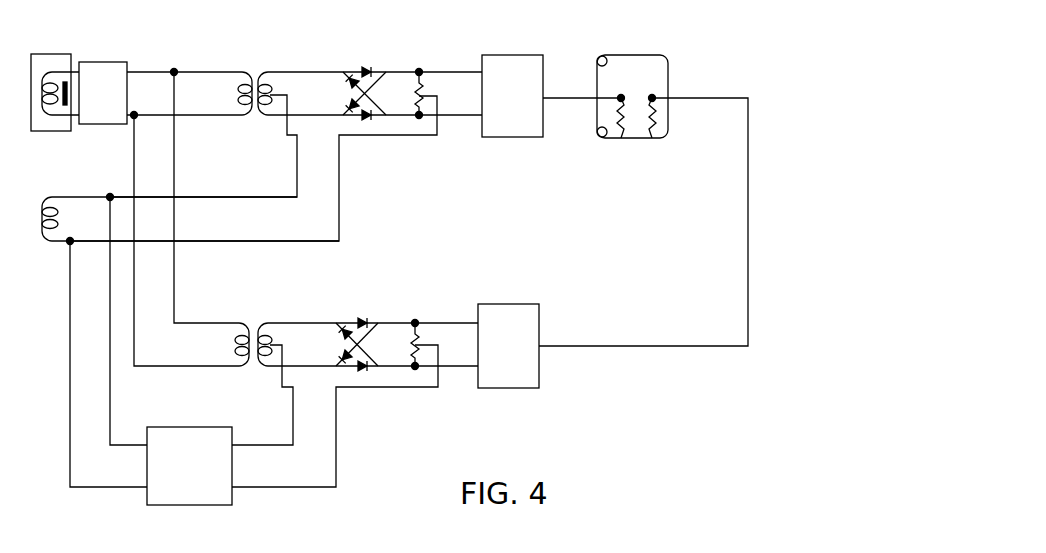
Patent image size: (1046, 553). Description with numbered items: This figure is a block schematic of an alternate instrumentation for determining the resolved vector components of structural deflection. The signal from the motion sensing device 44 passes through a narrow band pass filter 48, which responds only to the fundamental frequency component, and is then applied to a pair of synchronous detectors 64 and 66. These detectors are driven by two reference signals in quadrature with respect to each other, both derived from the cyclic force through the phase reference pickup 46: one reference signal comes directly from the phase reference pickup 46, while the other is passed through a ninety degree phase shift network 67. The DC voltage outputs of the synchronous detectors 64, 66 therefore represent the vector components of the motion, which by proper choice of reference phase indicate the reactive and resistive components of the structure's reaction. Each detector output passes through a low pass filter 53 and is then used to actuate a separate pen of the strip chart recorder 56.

The motion sensing device 44 is at (40, 54).
The narrow band pass filter 48 is at (117, 62).
The phase reference pickup 46 is at (42, 212).
The synchronous detector 64 is at (358, 66).
The synchronous detector 66 is at (347, 310).
The low pass filter 53 is at (515, 55).
The strip chart recorder 56 is at (655, 55).
The 90 degree phase shift network 67 is at (195, 427).